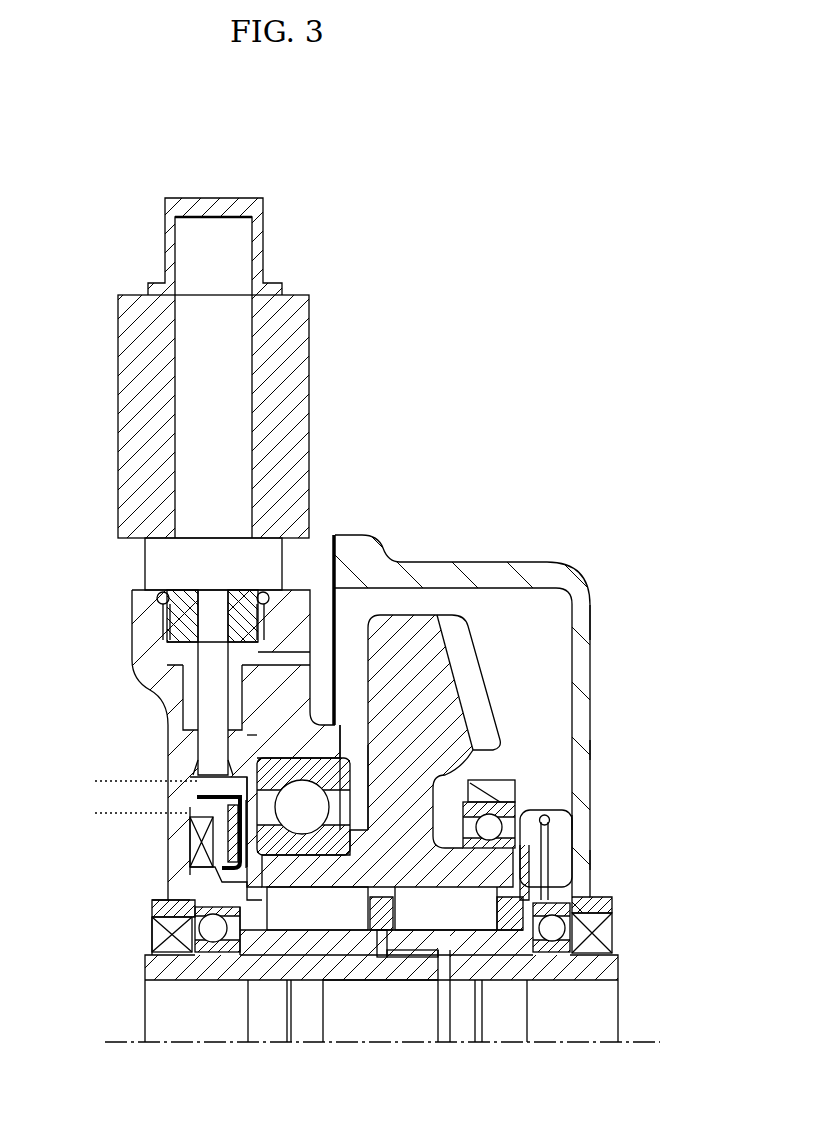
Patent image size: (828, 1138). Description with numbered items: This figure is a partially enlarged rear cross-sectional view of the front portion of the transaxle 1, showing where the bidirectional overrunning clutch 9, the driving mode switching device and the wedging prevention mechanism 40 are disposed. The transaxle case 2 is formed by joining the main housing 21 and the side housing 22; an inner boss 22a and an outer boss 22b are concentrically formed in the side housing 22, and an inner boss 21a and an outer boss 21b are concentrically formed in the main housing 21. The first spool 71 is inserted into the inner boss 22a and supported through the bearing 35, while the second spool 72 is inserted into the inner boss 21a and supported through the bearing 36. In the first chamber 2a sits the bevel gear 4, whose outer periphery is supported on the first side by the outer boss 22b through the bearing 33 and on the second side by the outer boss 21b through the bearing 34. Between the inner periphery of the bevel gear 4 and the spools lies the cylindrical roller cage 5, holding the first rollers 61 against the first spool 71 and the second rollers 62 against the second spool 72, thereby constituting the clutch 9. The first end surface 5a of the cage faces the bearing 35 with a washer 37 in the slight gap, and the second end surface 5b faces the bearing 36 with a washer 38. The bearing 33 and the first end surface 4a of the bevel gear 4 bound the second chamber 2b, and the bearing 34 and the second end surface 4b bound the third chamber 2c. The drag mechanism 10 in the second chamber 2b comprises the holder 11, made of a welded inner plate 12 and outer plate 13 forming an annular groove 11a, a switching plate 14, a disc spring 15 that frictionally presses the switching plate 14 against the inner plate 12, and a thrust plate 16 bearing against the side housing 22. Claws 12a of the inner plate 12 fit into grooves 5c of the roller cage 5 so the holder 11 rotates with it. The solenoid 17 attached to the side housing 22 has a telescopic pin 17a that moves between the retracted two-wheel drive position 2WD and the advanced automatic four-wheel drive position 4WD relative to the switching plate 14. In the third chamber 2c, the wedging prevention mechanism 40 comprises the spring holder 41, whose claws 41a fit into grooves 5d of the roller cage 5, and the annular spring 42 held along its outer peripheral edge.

The transaxle 1 is at (578, 260).
The transaxle case 2 is at (552, 528).
The first chamber 2a is at (546, 682).
The second chamber 2b is at (247, 732).
The third chamber 2c is at (578, 822).
The bevel gear 4 is at (440, 617).
The first end surface of the bevel gear 4a is at (345, 985).
The second end surface of the bevel gear 4b is at (507, 782).
The roller cage 5 is at (440, 835).
The first end surface of the roller cage 5a is at (245, 985).
The second end surface of the roller cage 5b is at (540, 985).
The grooves 5c is at (320, 940).
The grooves 5d is at (400, 942).
The first rollers 61 is at (365, 932).
The second rollers 62 is at (463, 932).
The first spool 71 is at (148, 962).
The second spool 72 is at (618, 960).
The bidirectional overrunning clutch 9 is at (382, 843).
The drag mechanism 10 is at (200, 905).
The holder 11 is at (205, 882).
The annular groove 11a is at (213, 826).
The inner plate 12 is at (225, 790).
The claws 12a is at (317, 909).
The outer plate 13 is at (200, 800).
The switching plate 14 is at (232, 820).
The disc spring 15 is at (205, 833).
The thrust plate 16 is at (220, 838).
The solenoid 17 is at (360, 347).
The telescopic pin 17a is at (208, 680).
The main housing 21 is at (590, 612).
The inner boss 21a is at (582, 868).
The outer boss 21b is at (588, 752).
The side housing 22 is at (130, 612).
The inner boss 22a is at (162, 947).
The outer boss 22b is at (340, 690).
The bearing 33 is at (330, 758).
The bearing 34 is at (500, 803).
The bearing 35 is at (205, 945).
The bearing 36 is at (594, 897).
The washer 37 is at (222, 957).
The washer 38 is at (555, 952).
The wedging prevention mechanism 40 is at (547, 810).
The spring holder 41 is at (556, 850).
The claws 41a is at (446, 909).
The spring 42 is at (550, 824).
The two-wheel drive mode position 2WD is at (114, 782).
The automatic four-wheel drive mode position 4WD is at (110, 815).